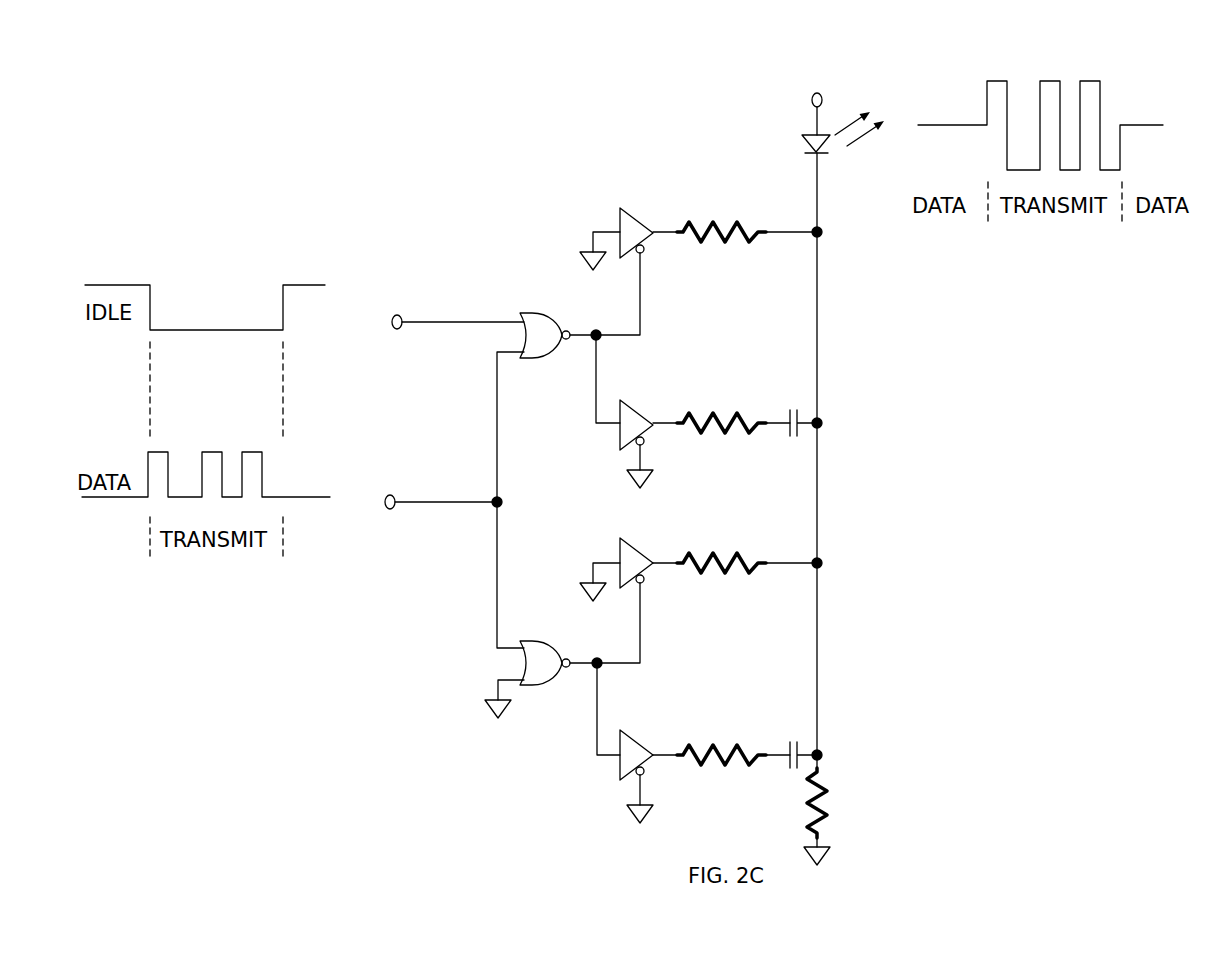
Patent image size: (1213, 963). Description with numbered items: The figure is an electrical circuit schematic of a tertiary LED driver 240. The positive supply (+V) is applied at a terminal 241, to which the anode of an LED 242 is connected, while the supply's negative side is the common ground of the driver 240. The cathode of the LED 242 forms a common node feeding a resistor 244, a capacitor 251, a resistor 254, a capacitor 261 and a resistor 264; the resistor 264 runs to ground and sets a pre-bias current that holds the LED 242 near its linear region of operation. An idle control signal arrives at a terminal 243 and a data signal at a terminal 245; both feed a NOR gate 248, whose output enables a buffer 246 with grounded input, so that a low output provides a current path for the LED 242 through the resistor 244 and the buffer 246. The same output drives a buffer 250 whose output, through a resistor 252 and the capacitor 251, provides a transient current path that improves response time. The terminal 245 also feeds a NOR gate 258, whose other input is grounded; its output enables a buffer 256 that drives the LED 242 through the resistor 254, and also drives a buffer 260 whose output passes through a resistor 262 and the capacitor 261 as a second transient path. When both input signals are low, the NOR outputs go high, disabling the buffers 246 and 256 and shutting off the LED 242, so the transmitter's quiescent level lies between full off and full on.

The tertiary LED driver 240 is at (492, 207).
The terminal 241 is at (808, 92).
The LED 242 is at (800, 137).
The terminal 243 is at (397, 315).
The resistor 244 is at (722, 222).
The terminal 245 is at (390, 495).
The buffer 246 is at (625, 208).
The NOR gate 248 is at (535, 313).
The buffer 250 is at (625, 400).
The capacitor 251 is at (790, 437).
The resistor 252 is at (722, 410).
The resistor 254 is at (722, 560).
The buffer 256 is at (625, 538).
The NOR gate 258 is at (535, 641).
The buffer 260 is at (625, 730).
The capacitor 261 is at (790, 769).
The resistor 262 is at (722, 750).
The resistor 264 is at (830, 792).